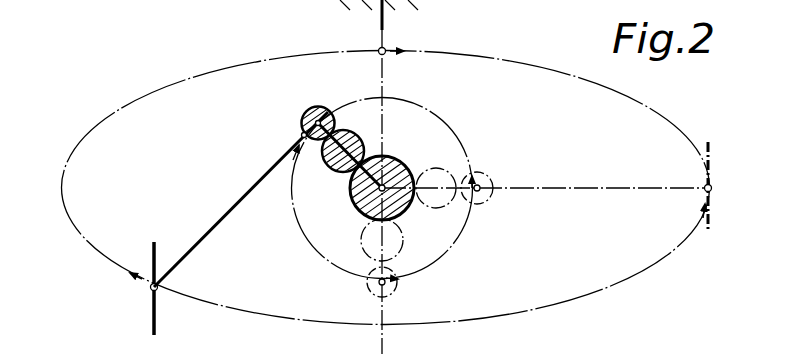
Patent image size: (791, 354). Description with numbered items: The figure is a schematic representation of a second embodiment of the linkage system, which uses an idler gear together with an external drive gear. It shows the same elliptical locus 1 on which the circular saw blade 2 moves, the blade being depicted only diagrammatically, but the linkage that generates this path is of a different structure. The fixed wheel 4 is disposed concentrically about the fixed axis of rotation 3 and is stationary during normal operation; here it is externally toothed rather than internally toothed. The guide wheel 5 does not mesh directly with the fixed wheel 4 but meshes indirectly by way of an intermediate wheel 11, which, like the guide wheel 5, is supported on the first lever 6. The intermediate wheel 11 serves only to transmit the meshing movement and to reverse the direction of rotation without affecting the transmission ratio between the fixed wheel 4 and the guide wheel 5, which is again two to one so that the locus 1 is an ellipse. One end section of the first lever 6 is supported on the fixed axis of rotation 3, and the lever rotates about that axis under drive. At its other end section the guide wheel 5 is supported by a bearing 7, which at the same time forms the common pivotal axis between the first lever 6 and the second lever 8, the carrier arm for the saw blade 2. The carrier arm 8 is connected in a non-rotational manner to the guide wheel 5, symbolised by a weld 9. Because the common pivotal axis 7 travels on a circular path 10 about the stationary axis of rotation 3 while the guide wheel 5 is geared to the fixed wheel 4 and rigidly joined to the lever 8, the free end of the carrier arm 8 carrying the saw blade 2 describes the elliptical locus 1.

The locus 1 is at (60, 172).
The circular saw blade 2 is at (385, 49).
The fixed axis of rotation 3 is at (392, 200).
The fixed wheel 4 is at (398, 165).
The guide wheel 5 is at (322, 108).
The first lever 6 is at (359, 137).
The bearing 7 is at (304, 112).
The second lever 8 is at (230, 212).
The weld 9 is at (302, 135).
The circular path 10 is at (325, 262).
The intermediate wheel 11 is at (333, 170).